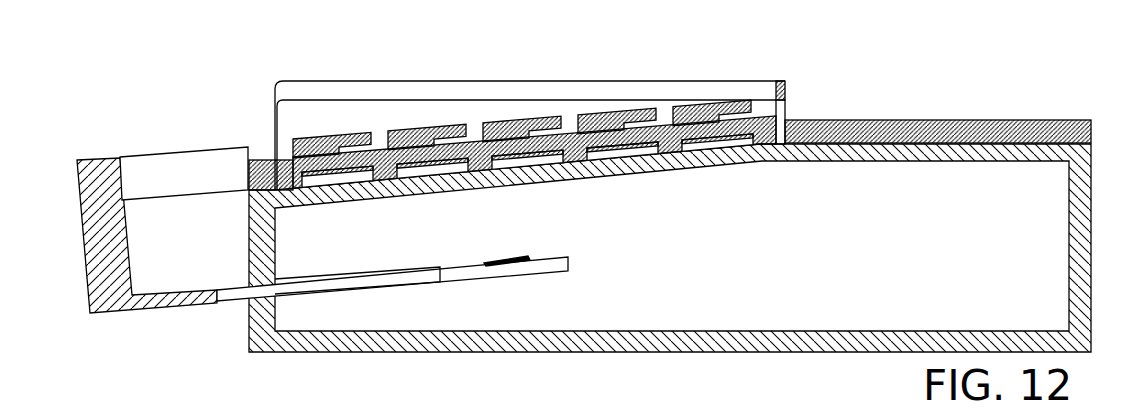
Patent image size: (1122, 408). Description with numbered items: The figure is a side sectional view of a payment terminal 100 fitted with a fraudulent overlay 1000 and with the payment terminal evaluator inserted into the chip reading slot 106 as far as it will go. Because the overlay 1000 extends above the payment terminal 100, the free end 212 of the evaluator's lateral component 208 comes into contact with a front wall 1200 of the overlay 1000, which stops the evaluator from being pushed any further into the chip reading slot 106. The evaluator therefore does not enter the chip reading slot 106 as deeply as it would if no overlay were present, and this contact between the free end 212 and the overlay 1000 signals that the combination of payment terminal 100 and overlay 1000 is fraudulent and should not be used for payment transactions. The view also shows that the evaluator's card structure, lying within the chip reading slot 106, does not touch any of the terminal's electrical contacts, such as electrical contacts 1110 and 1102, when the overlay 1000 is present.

The payment terminal 100 is at (1008, 140).
The overlay 1000 is at (930, 137).
The free end 212 is at (248, 160).
The front wall 1200 is at (277, 150).
The lateral component 208 is at (178, 148).
The chip reading slot 106 is at (310, 287).
The electrical contact 1110 is at (502, 265).
The electrical contact 1102 is at (528, 262).